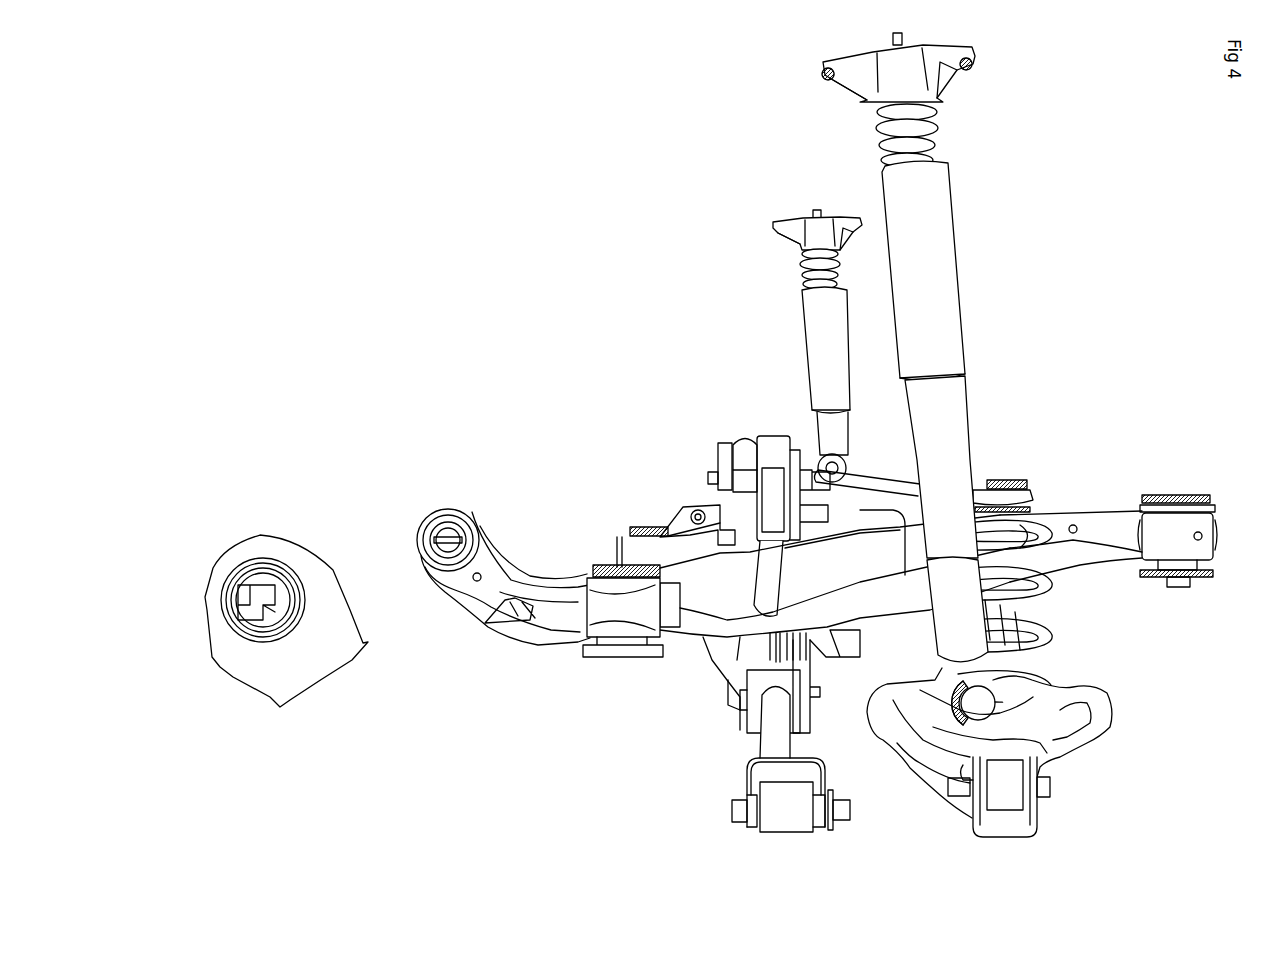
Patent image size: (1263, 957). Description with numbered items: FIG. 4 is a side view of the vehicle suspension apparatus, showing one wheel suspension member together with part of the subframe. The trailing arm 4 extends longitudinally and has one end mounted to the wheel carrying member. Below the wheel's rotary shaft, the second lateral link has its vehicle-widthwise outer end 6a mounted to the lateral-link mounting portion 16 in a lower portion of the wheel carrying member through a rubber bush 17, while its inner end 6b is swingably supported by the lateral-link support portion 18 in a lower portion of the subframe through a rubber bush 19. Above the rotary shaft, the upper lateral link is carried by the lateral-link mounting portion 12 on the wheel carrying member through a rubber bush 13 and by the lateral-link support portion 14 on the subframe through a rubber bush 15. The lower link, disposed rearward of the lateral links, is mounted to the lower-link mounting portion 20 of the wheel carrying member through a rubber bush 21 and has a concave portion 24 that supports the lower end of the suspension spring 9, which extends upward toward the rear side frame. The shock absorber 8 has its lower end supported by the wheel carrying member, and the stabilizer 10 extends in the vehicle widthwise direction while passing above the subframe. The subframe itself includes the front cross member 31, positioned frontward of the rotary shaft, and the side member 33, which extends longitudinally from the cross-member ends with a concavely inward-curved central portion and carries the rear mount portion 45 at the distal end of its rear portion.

The trailing arm 4 is at (512, 572).
The outer end of second lateral link 6a is at (745, 775).
The inner end of second lateral link 6b is at (728, 690).
The shock absorber 8 is at (957, 255).
The suspension spring 9 is at (1050, 630).
The stabilizer 10 is at (858, 483).
The lateral-link mounting portion 12 is at (720, 493).
The rubber bush 13 is at (757, 455).
The lateral-link support portion 14 is at (720, 450).
The rubber bush 15 is at (740, 452).
The lateral-link mounting portion 16 is at (750, 828).
The rubber bush 17 is at (795, 828).
The lateral-link support portion 18 is at (738, 715).
The rubber bush 19 is at (745, 722).
The lower-link mounting portion 20 is at (975, 805).
The rubber bush 21 is at (1010, 800).
The concave portion 24 is at (1060, 695).
The front cross member 31 is at (702, 686).
The side member 33 is at (1100, 497).
The rear mount portion 45 is at (615, 572).